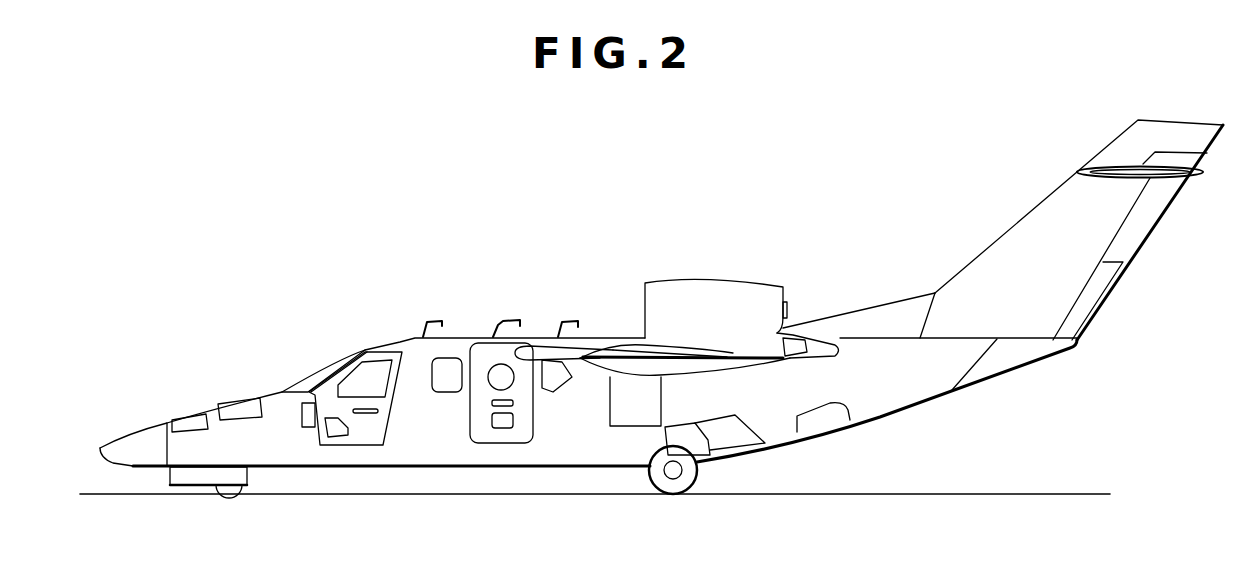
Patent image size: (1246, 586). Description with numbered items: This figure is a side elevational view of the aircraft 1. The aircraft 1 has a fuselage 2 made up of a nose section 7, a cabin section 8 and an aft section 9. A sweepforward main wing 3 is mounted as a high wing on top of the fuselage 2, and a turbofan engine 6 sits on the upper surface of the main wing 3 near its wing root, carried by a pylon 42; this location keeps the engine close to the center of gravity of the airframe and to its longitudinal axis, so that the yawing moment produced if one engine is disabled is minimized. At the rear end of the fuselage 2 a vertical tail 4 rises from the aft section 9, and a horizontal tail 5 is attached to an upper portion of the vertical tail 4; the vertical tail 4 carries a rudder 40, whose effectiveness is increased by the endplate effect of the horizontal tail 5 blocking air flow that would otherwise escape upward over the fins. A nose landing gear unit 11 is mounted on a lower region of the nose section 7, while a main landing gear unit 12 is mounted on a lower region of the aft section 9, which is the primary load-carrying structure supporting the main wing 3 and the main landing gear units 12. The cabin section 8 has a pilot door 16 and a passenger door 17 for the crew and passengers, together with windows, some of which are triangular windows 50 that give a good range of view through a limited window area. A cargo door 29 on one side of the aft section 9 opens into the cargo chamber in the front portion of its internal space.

The aircraft 1 is at (740, 175).
The fuselage 2 is at (468, 324).
The main wing 3 is at (601, 325).
The vertical tail 4 is at (1027, 235).
The horizontal tail 5 is at (1158, 180).
The turbofan engine 6 is at (733, 298).
The nose section 7 is at (150, 470).
The cabin section 8 is at (453, 467).
The aft section 9 is at (925, 400).
The nose landing gear unit 11 is at (212, 497).
The main landing gear unit 12 is at (712, 473).
The pilot door 16 is at (353, 437).
The passenger door 17 is at (502, 437).
The cargo door 29 is at (630, 415).
The rudder 40 is at (1132, 240).
The pylon 42 is at (793, 326).
The triangular window 50 is at (558, 392).